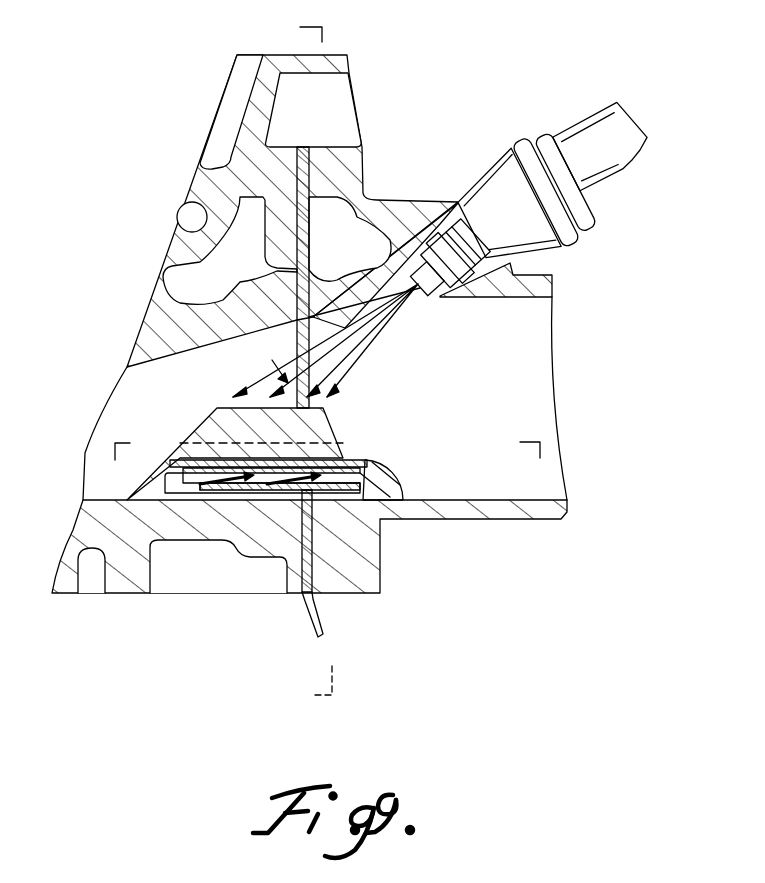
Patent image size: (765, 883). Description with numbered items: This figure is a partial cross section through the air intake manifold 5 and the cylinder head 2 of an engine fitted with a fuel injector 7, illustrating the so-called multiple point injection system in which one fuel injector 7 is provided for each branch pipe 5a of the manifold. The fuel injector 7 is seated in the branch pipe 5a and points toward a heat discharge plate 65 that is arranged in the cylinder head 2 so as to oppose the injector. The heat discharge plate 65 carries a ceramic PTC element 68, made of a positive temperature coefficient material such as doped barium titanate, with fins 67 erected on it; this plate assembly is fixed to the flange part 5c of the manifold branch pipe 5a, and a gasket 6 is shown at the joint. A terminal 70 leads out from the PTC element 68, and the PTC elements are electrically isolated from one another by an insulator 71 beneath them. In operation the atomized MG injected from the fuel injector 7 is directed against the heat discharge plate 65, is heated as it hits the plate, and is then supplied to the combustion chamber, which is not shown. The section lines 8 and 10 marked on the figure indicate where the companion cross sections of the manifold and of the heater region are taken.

The cylinder head 2 is at (272, 55).
The air intake manifold 5 is at (557, 283).
The branch pipe 5a is at (553, 275).
The flange part 5c is at (326, 147).
The gasket 6 is at (313, 257).
The fuel injector 7 is at (510, 152).
The heat discharge plate 65 is at (355, 457).
The fins 67 is at (212, 420).
The ceramic PTC element 68 is at (373, 463).
The terminal 70 is at (323, 634).
The insulator 71 is at (383, 487).
The atomized MG is at (325, 340).
The section line VIII—VIII 8 is at (300, 354).
The section line X—X 10 is at (320, 465).